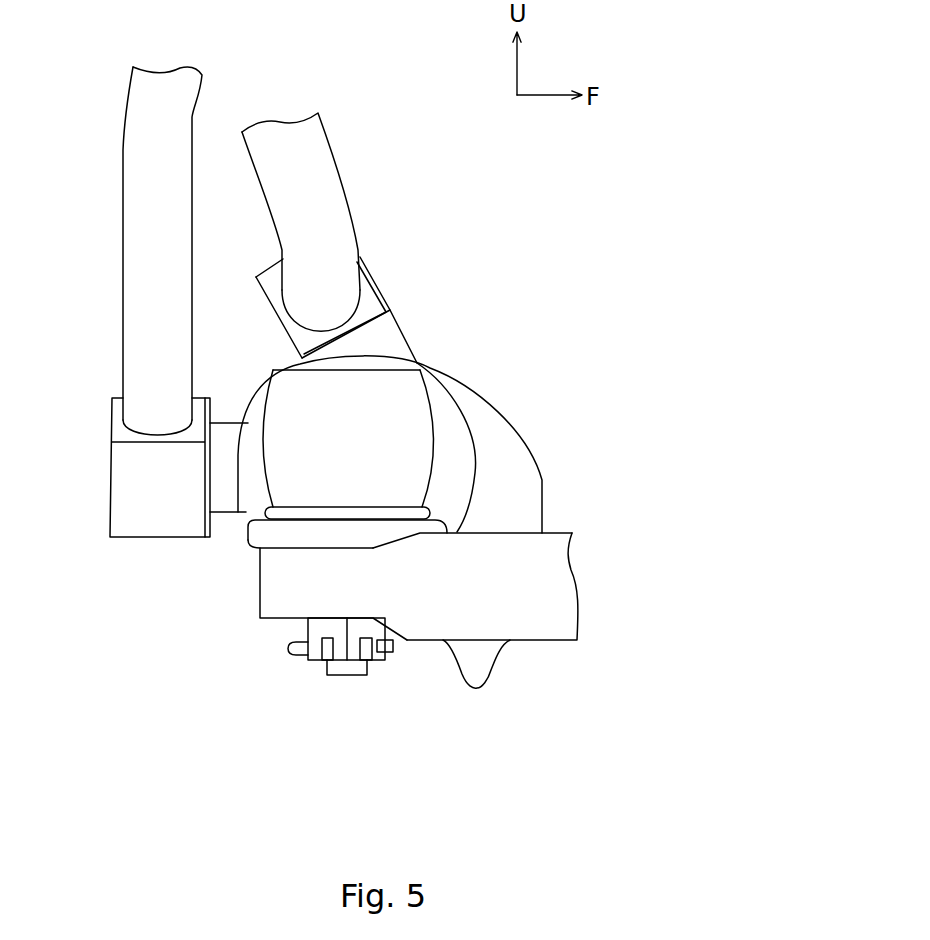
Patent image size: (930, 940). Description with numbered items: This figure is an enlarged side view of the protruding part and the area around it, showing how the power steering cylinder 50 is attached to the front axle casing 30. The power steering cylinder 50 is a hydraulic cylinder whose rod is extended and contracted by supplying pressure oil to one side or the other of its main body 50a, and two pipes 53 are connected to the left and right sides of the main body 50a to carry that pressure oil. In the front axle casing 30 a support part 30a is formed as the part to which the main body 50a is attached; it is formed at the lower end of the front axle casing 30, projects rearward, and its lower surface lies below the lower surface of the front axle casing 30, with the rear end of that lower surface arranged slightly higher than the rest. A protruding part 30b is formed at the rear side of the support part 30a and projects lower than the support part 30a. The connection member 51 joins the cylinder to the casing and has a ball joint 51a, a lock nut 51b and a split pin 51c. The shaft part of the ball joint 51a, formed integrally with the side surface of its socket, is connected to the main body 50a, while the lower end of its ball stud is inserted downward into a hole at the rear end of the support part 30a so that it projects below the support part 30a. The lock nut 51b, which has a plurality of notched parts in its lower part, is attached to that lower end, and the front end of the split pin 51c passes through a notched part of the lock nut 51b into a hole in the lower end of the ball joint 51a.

The front axle casing 30 is at (526, 618).
The support part 30a is at (545, 547).
The protruding part 30b is at (477, 670).
The power steering cylinder 50 is at (458, 414).
The main body 50a is at (497, 433).
The connection member 51 is at (272, 522).
The ball joint 51a is at (290, 468).
The lock nut 51b is at (310, 632).
The split pin 51c is at (290, 643).
The pipes 53 is at (133, 263).